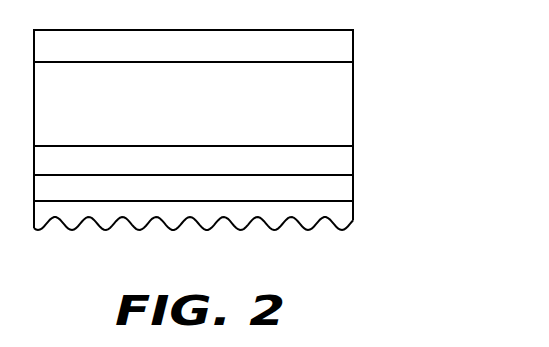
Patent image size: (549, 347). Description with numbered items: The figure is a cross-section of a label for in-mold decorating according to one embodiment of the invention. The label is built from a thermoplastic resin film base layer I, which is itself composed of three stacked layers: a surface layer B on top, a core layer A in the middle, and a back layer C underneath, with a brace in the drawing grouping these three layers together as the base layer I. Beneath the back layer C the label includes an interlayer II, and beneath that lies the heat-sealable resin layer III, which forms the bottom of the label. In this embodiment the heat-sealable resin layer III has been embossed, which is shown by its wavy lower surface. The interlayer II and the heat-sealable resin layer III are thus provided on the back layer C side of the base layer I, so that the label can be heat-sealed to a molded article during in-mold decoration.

The thermoplastic resin film base layer I is at (270, 100).
The core layer A is at (343, 103).
The surface layer B is at (347, 47).
The back layer C is at (239, 151).
The interlayer II is at (347, 188).
The heat-sealable resin layer III is at (346, 216).